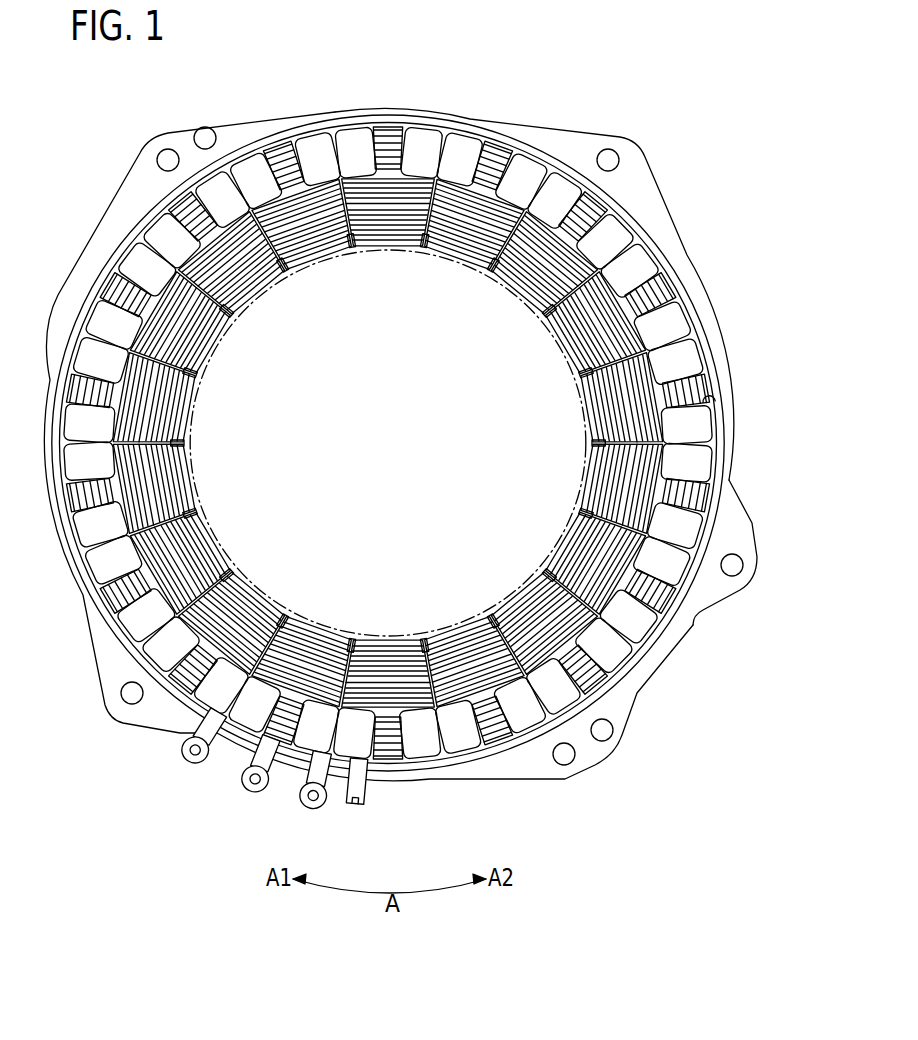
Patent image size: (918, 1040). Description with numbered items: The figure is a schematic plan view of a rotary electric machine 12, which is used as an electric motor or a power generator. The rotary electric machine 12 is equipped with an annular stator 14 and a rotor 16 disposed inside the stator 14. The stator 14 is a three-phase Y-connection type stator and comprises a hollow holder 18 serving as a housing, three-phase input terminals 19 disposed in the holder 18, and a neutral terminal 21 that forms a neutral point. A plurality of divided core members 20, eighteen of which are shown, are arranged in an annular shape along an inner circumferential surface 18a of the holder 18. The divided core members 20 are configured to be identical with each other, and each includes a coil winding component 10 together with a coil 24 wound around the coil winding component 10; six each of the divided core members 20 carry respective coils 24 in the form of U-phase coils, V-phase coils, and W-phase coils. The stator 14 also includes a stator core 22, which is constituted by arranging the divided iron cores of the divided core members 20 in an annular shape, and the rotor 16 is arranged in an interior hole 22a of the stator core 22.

The coil winding component 10 is at (637, 625).
The rotary electric machine 12 is at (131, 90).
The stator 14 is at (414, 427).
The rotor 16 is at (557, 352).
The holder 18 is at (734, 512).
The inner circumferential surface 18a is at (708, 391).
The three-phase input terminals 19 is at (196, 763).
The divided core members 20 is at (467, 745).
The neutral terminal 21 is at (355, 808).
The stator core 22 is at (419, 415).
The interior hole 22a is at (343, 253).
The coil 24 is at (580, 660).